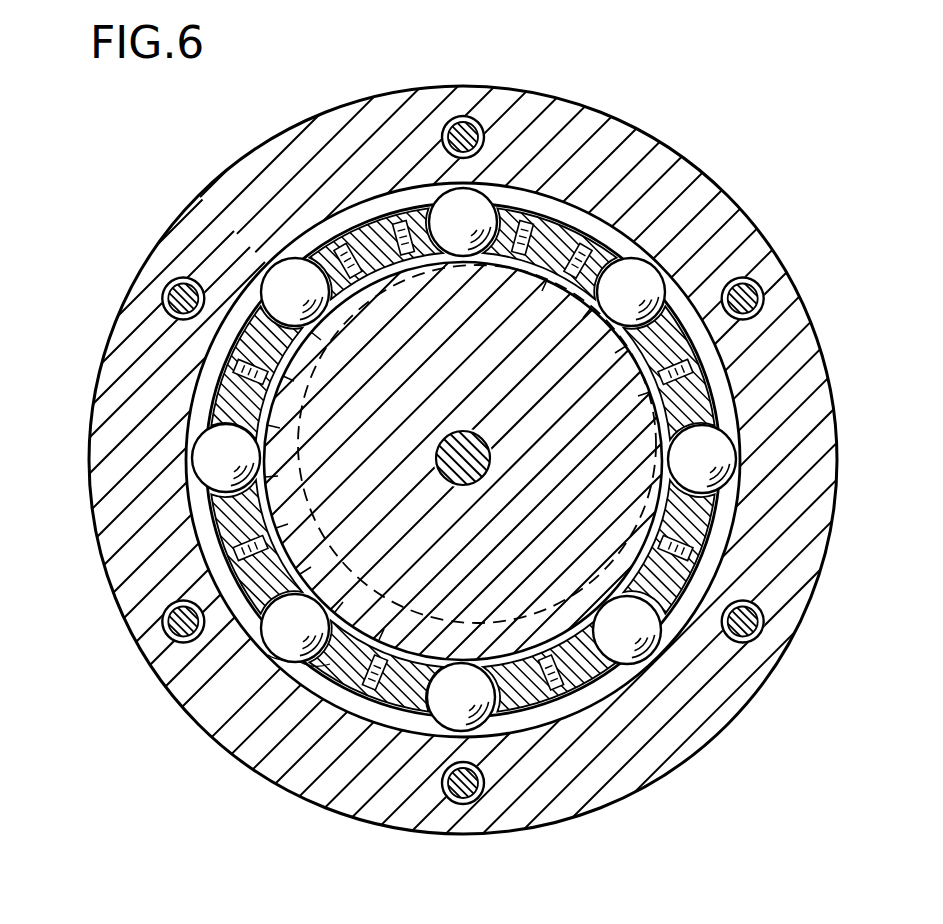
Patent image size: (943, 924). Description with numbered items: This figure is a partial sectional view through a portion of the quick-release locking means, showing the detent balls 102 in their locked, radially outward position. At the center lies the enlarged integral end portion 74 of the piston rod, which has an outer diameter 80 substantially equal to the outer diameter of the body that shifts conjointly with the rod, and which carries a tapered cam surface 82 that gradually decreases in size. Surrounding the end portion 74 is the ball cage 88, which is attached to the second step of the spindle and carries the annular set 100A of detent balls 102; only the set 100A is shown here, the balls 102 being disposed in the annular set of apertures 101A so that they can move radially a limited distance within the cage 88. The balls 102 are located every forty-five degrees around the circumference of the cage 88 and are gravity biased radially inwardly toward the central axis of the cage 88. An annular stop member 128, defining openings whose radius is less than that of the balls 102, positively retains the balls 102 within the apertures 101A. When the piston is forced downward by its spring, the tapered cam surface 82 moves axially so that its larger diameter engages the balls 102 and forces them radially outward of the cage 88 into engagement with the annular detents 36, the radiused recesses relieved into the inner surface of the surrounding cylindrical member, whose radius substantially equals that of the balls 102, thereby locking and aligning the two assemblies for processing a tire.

The annular detents 36 is at (405, 200).
The enlarged integral end portion 74 is at (392, 533).
The outer diameter 80 is at (492, 204).
The tapered cam surface 82 is at (313, 522).
The ball cage 88 is at (275, 651).
The annular set of detent balls 100A is at (308, 656).
The annular set of apertures 101A is at (272, 487).
The detent balls 102 is at (446, 205).
The annular stop member 128 is at (218, 388).